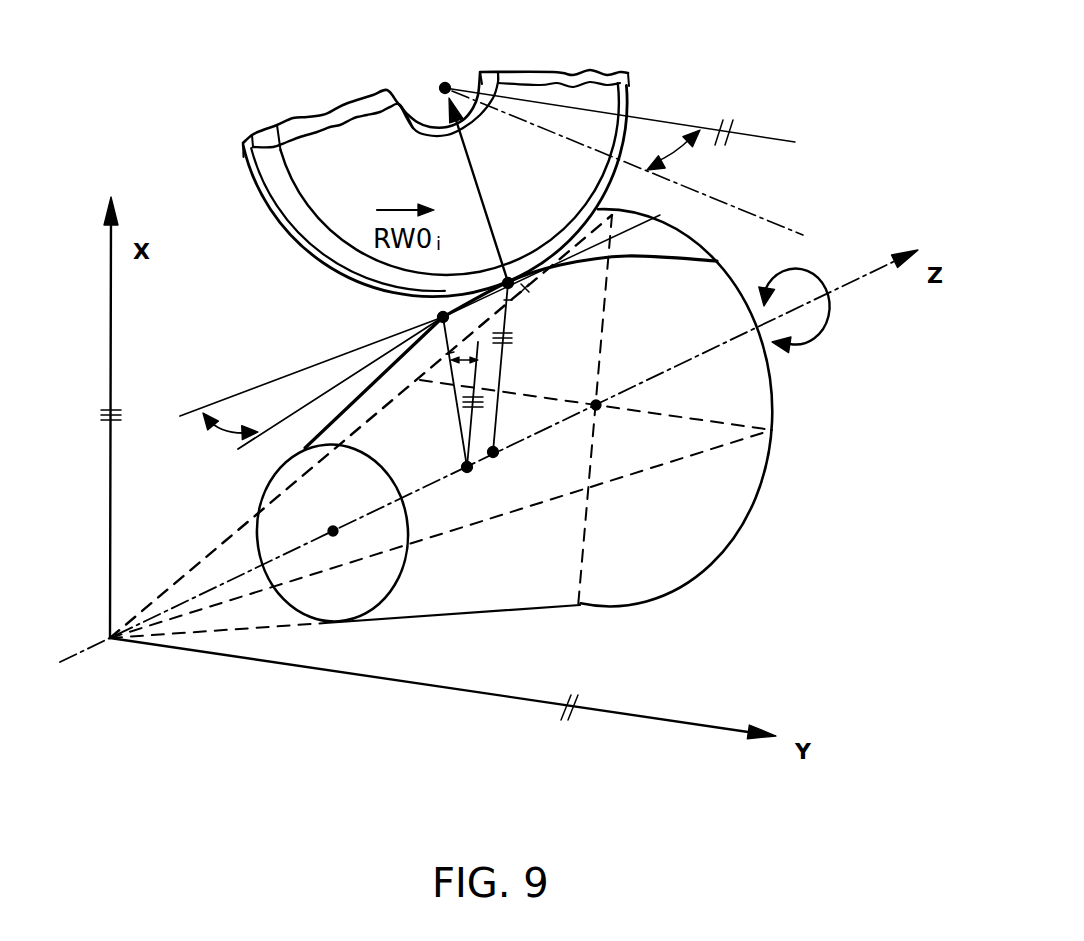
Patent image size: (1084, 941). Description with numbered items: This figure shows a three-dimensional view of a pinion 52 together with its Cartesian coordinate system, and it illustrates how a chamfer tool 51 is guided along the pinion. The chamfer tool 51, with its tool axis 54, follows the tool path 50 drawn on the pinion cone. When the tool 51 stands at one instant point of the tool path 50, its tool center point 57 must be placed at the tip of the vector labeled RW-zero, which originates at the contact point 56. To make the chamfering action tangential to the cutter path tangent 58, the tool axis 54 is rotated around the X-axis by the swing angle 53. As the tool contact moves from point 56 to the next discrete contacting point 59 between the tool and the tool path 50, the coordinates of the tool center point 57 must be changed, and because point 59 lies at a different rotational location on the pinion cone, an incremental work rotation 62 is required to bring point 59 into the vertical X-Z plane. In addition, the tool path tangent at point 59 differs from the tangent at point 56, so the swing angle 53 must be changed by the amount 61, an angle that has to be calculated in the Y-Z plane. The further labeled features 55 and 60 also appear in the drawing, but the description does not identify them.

The tool path 50 is at (648, 257).
The chamfer tool 51 is at (327, 182).
The pinion 52 is at (752, 407).
The swing angle 53 is at (680, 155).
The tool axis 54 is at (783, 228).
The rotation direction of cone 55 is at (832, 317).
The contact point 56 is at (520, 287).
The tool center point 57 is at (444, 86).
The cutter path tangent 58 is at (268, 381).
The next discrete contacting point 59 is at (441, 316).
The second tangent line 60 is at (350, 387).
The swing angle change 61 is at (223, 428).
The incremental work rotation 62 is at (462, 363).